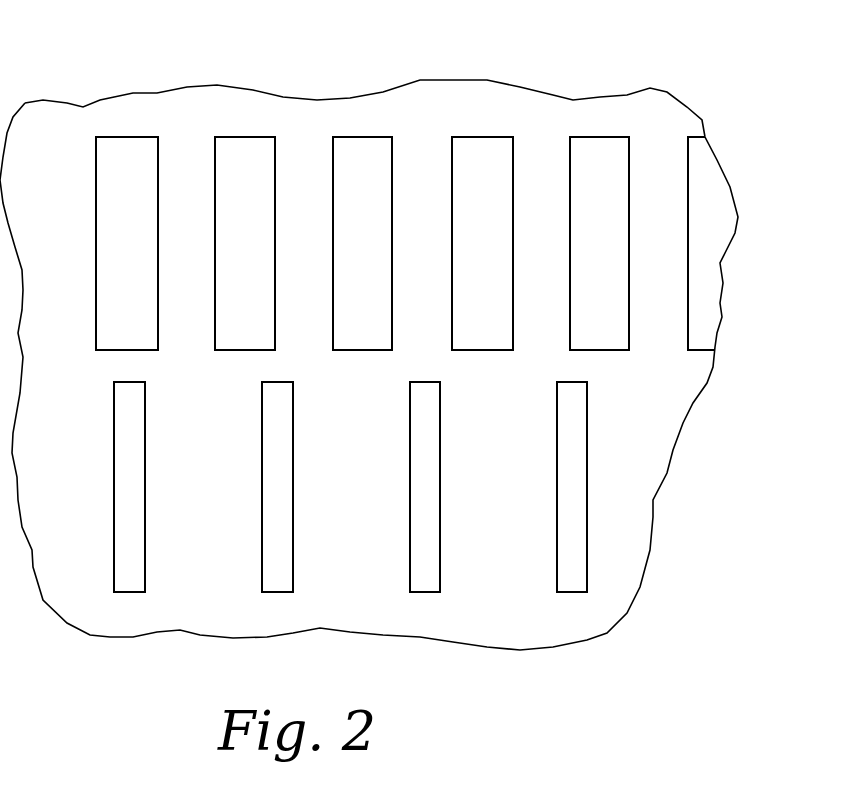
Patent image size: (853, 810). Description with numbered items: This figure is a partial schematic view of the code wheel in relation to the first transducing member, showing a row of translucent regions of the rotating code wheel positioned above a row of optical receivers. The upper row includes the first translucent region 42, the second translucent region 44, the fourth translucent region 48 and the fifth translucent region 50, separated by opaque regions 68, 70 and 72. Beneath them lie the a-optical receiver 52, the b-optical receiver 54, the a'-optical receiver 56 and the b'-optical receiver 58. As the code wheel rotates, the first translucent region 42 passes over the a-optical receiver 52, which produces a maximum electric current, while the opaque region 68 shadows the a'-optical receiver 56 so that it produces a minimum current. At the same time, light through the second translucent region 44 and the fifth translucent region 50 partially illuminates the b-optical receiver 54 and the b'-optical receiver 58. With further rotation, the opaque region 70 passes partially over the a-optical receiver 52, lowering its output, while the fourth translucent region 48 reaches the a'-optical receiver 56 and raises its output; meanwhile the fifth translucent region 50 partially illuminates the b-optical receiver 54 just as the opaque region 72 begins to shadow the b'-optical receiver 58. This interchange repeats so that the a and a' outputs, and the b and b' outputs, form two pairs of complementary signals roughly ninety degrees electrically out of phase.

The first translucent region 42 is at (133, 137).
The second translucent region 44 is at (242, 152).
The fourth translucent region 48 is at (480, 152).
The fifth translucent region 50 is at (602, 137).
The a-optical receiver 52 is at (133, 592).
The b-optical receiver 54 is at (278, 592).
The a'-optical receiver 56 is at (425, 592).
The b'-optical receiver 58 is at (570, 592).
The opaque region 68 is at (412, 167).
The opaque region 70 is at (185, 157).
The opaque region 72 is at (657, 165).